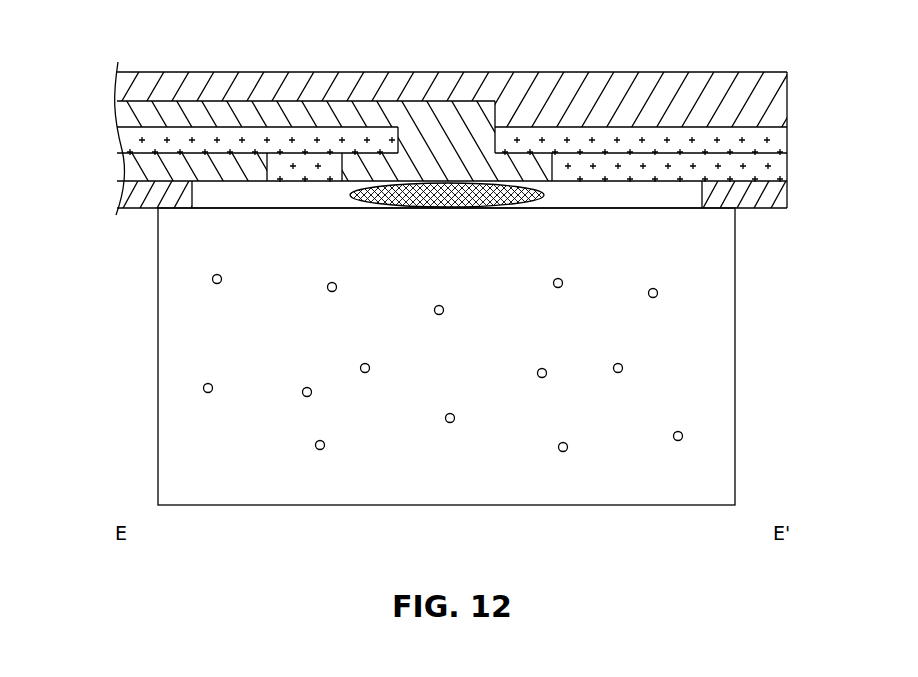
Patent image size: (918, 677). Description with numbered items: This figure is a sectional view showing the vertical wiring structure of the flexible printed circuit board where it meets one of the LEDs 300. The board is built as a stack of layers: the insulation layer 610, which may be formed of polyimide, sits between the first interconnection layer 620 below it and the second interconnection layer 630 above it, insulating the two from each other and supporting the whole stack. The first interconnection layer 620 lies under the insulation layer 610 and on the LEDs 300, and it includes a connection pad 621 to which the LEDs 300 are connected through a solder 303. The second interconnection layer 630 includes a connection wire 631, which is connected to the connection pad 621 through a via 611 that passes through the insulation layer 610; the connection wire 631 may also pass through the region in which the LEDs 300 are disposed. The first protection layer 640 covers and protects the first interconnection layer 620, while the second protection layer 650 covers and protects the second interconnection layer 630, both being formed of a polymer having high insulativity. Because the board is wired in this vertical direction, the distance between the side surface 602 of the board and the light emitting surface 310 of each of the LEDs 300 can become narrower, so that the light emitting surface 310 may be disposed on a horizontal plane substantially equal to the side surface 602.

The LED 300 is at (720, 408).
The solder 303 is at (470, 187).
The light emitting surface 310 is at (735, 356).
The side surface 602 is at (787, 142).
The insulation layer 610 is at (130, 140).
The via 611 is at (440, 142).
The first interconnection layer 620 is at (137, 167).
The connection pad 621 is at (368, 165).
The second interconnection layer 630 is at (122, 112).
The connection wire 631 is at (213, 113).
The first protection layer 640 is at (137, 192).
The second protection layer 650 is at (125, 88).